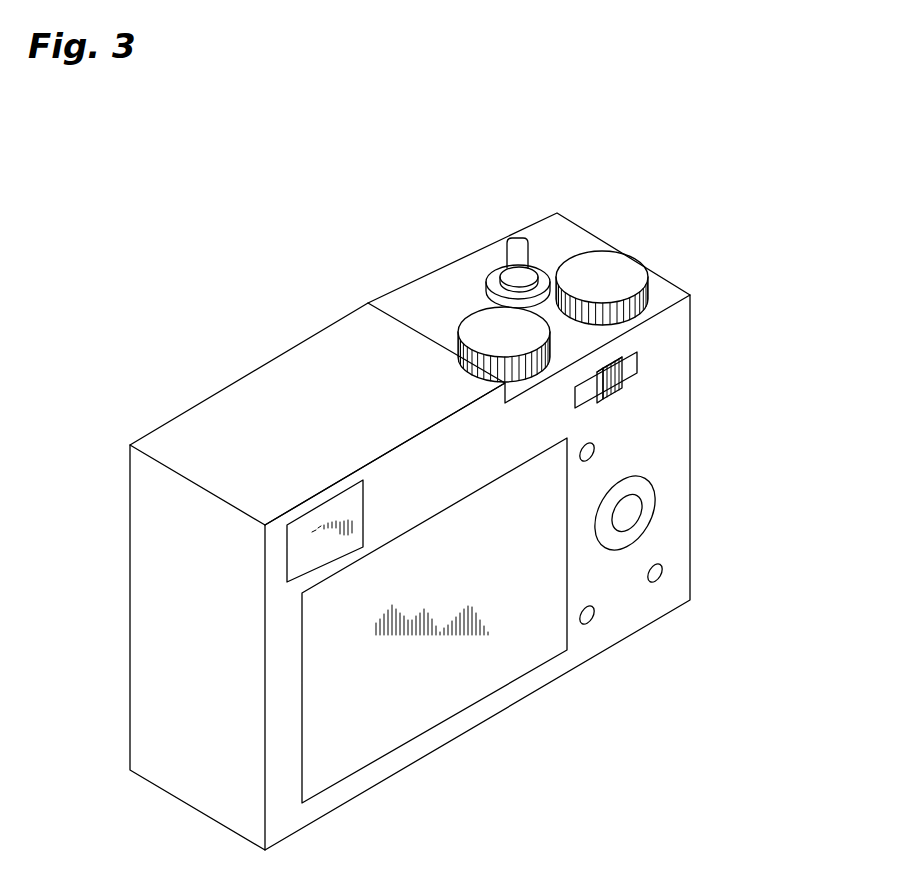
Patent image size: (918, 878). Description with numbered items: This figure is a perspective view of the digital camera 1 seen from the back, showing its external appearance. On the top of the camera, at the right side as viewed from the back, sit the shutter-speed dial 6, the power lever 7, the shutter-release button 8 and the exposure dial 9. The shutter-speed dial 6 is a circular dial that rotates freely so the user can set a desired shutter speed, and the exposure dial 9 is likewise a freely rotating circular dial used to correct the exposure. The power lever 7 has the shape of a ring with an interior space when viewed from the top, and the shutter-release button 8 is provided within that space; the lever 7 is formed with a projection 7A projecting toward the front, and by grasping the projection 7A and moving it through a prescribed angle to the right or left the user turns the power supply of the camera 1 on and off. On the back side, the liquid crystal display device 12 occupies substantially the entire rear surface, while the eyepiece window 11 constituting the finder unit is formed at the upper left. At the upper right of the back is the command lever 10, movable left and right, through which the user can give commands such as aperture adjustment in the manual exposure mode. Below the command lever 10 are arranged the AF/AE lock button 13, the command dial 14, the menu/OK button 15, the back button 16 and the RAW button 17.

The digital camera 1 is at (673, 168).
The shutter-speed dial 6 is at (488, 318).
The power lever 7 is at (495, 278).
The projection 7A is at (518, 241).
The shutter-release button 8 is at (523, 278).
The exposure dial 9 is at (633, 270).
The command lever 10 is at (622, 366).
The eyepiece window 11 is at (362, 528).
The liquid crystal display device 12 is at (440, 683).
The AF/AE lock button 13 is at (595, 448).
The command dial 14 is at (650, 495).
The menu/OK button 15 is at (627, 517).
The back button 16 is at (590, 620).
The RAW button 17 is at (658, 579).